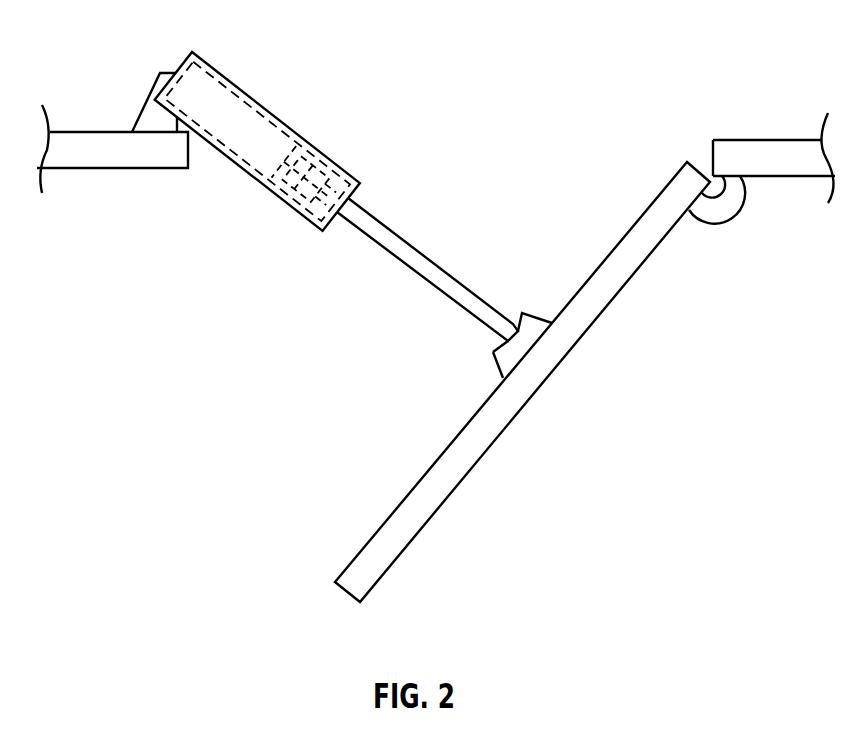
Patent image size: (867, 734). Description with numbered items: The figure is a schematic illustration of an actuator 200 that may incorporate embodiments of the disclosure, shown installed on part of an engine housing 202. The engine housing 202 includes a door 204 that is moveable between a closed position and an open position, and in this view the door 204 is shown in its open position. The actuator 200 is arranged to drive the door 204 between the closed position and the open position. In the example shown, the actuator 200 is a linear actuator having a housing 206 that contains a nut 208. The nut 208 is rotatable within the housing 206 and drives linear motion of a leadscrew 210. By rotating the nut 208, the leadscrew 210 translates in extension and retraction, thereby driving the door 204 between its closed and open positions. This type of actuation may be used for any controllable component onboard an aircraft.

The actuator 200 is at (322, 72).
The engine housing 202 is at (108, 160).
The door 204 is at (432, 495).
The housing 206 is at (265, 171).
The nut 208 is at (322, 152).
The leadscrew 210 is at (440, 271).